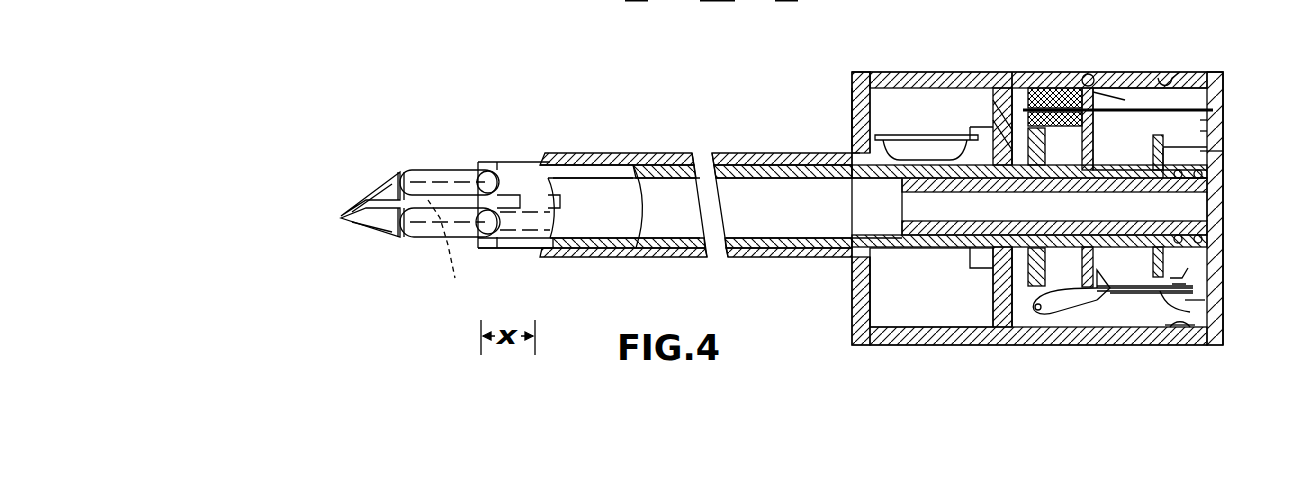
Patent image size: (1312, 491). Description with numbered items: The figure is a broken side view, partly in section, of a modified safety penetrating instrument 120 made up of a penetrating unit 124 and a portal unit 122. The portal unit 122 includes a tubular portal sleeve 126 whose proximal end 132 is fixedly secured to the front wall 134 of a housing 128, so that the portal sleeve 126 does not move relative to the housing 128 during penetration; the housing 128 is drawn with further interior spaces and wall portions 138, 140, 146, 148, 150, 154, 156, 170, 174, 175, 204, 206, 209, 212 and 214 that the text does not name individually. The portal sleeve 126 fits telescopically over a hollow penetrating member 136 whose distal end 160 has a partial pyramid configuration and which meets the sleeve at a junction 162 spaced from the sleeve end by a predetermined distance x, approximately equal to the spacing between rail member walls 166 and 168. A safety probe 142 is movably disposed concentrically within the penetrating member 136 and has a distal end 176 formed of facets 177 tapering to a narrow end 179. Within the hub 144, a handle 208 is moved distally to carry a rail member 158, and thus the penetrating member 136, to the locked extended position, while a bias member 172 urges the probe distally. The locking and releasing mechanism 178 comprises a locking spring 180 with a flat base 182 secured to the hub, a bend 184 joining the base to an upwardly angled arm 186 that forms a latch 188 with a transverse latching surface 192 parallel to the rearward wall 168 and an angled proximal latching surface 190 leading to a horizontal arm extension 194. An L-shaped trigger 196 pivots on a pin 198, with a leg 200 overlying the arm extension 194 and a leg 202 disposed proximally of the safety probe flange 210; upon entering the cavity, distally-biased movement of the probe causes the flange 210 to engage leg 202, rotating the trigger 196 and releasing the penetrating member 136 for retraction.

The safety penetrating instrument 120 is at (752, 104).
The portal unit 122 is at (893, 66).
The penetrating unit 124 is at (1236, 62).
The portal sleeve 126 is at (634, 152).
The housing 128 is at (846, 74).
The proximal end 132 is at (851, 152).
The front wall 134 is at (852, 96).
The penetrating member 136 is at (607, 252).
The lower chamber 138 is at (990, 298).
The cup member 140 is at (928, 133).
The safety probe 142 is at (445, 165).
The hub 144 is at (1228, 103).
The partition 146 is at (1012, 64).
The bore 148 is at (1210, 131).
The upper chamber 150 is at (1190, 88).
The passage 154 is at (1208, 207).
The chamber 156 is at (1100, 128).
The rail member 158 is at (1207, 124).
The distal end 160 is at (449, 254).
The junction 162 is at (480, 249).
The rail member wall 166 is at (1002, 128).
The rail member rearward wall 168 is at (1095, 150).
The seal block 170 is at (1062, 95).
The bias member 172 is at (1065, 190).
The seal 174 is at (1038, 128).
The bar 175 is at (1120, 110).
The distal end 176 is at (375, 196).
The facets 177 is at (394, 190).
The locking and releasing mechanism 178 is at (1112, 296).
The narrow end 179 is at (343, 222).
The locking spring 180 is at (1125, 298).
The flat base 182 is at (1192, 303).
The bend 184 is at (1034, 300).
The arm 186 is at (1062, 308).
The latch 188 is at (1115, 274).
The proximal latching surface 190 is at (1178, 328).
The latching surface 192 is at (1088, 288).
The arm extension 194 is at (1208, 326).
The trigger 196 is at (1195, 260).
The pin 198 is at (1207, 290).
The leg 200 is at (1192, 312).
The leg 202 is at (1190, 271).
The partition bar 204 is at (1090, 100).
The ball 206 is at (1088, 74).
The handle 208 is at (1128, 96).
The hook 209 is at (1185, 64).
The safety probe flange 210 is at (1203, 166).
The port 212 is at (1223, 152).
The ledge 214 is at (1208, 184).